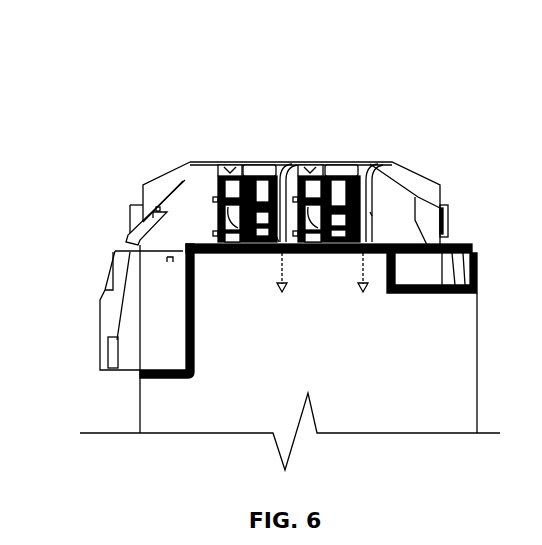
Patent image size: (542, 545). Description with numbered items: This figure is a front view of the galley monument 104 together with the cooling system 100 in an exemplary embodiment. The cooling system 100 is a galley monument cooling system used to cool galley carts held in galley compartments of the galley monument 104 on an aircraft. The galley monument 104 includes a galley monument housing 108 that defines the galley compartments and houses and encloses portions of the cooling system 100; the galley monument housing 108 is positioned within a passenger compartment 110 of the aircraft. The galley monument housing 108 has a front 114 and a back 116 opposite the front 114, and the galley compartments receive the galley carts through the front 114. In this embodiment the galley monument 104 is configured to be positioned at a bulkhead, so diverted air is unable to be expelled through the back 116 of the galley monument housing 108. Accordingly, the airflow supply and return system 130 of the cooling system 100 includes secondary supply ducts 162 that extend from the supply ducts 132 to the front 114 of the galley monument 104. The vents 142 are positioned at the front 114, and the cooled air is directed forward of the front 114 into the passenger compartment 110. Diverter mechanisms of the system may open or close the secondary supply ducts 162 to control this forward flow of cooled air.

The cooling system 100 is at (281, 271).
The galley monument 104 is at (143, 160).
The galley monument housing 108 is at (197, 253).
The passenger compartment 110 is at (276, 397).
The front 114 is at (271, 250).
The back 116 is at (221, 160).
The airflow supply and return system 130 is at (283, 157).
The supply ducts 132 is at (258, 162).
The vents 142 is at (297, 253).
The secondary supply ducts 162 is at (282, 243).